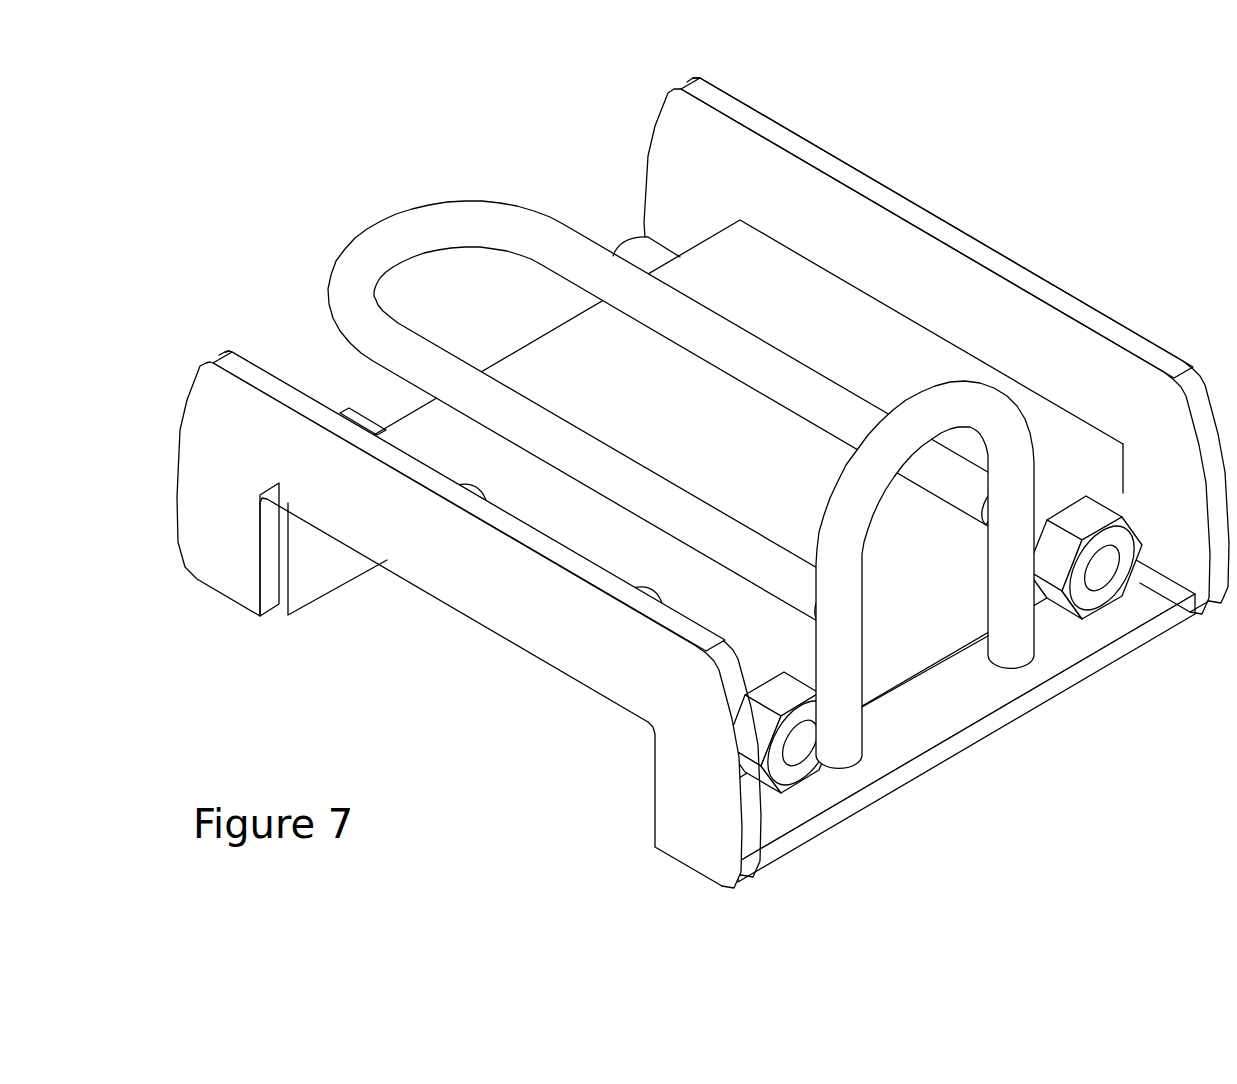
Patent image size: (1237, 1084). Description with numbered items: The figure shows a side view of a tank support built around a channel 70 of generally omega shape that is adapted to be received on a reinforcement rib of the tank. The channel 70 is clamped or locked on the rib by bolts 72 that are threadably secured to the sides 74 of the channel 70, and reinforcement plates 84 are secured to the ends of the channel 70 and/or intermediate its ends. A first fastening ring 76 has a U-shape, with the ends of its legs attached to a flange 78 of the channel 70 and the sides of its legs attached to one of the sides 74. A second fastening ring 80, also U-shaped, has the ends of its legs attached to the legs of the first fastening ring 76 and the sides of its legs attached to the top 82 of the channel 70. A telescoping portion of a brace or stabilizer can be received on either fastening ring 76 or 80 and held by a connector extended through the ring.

The channel 70 is at (880, 355).
The bolts 72 is at (350, 415).
The sides 74 is at (913, 622).
The first fastening ring 76 is at (1007, 430).
The flange 78 is at (1012, 683).
The second fastening ring 80 is at (437, 223).
The top 82 is at (652, 423).
The reinforcement plates 84 is at (817, 208).